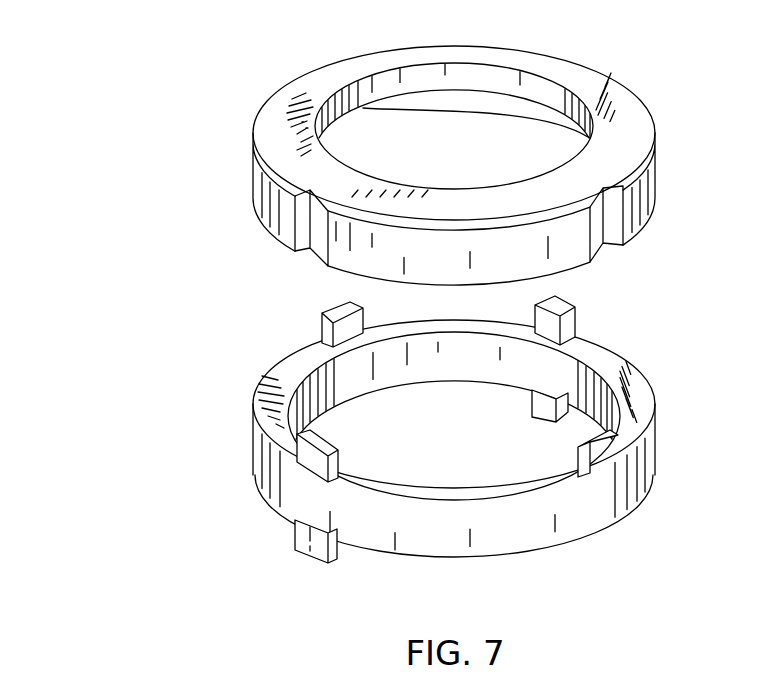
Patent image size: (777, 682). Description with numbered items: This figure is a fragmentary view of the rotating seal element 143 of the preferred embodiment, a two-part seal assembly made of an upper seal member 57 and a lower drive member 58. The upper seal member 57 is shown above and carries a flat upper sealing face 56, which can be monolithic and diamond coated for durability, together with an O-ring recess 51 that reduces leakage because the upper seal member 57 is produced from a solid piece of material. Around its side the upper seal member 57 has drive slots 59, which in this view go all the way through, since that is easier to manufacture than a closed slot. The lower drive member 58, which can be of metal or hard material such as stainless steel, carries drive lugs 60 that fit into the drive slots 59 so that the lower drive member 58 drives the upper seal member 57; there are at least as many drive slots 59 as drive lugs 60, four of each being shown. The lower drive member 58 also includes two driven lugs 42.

The rotating seal element 143 is at (137, 137).
The sealing face 56 is at (544, 69).
The upper seal member 57 is at (283, 89).
The O-ring recess 51 is at (357, 112).
The drive slots 59 is at (293, 251).
The lower drive member 58 is at (262, 382).
The drive lugs 60 is at (322, 323).
The driven lugs 42 is at (553, 427).